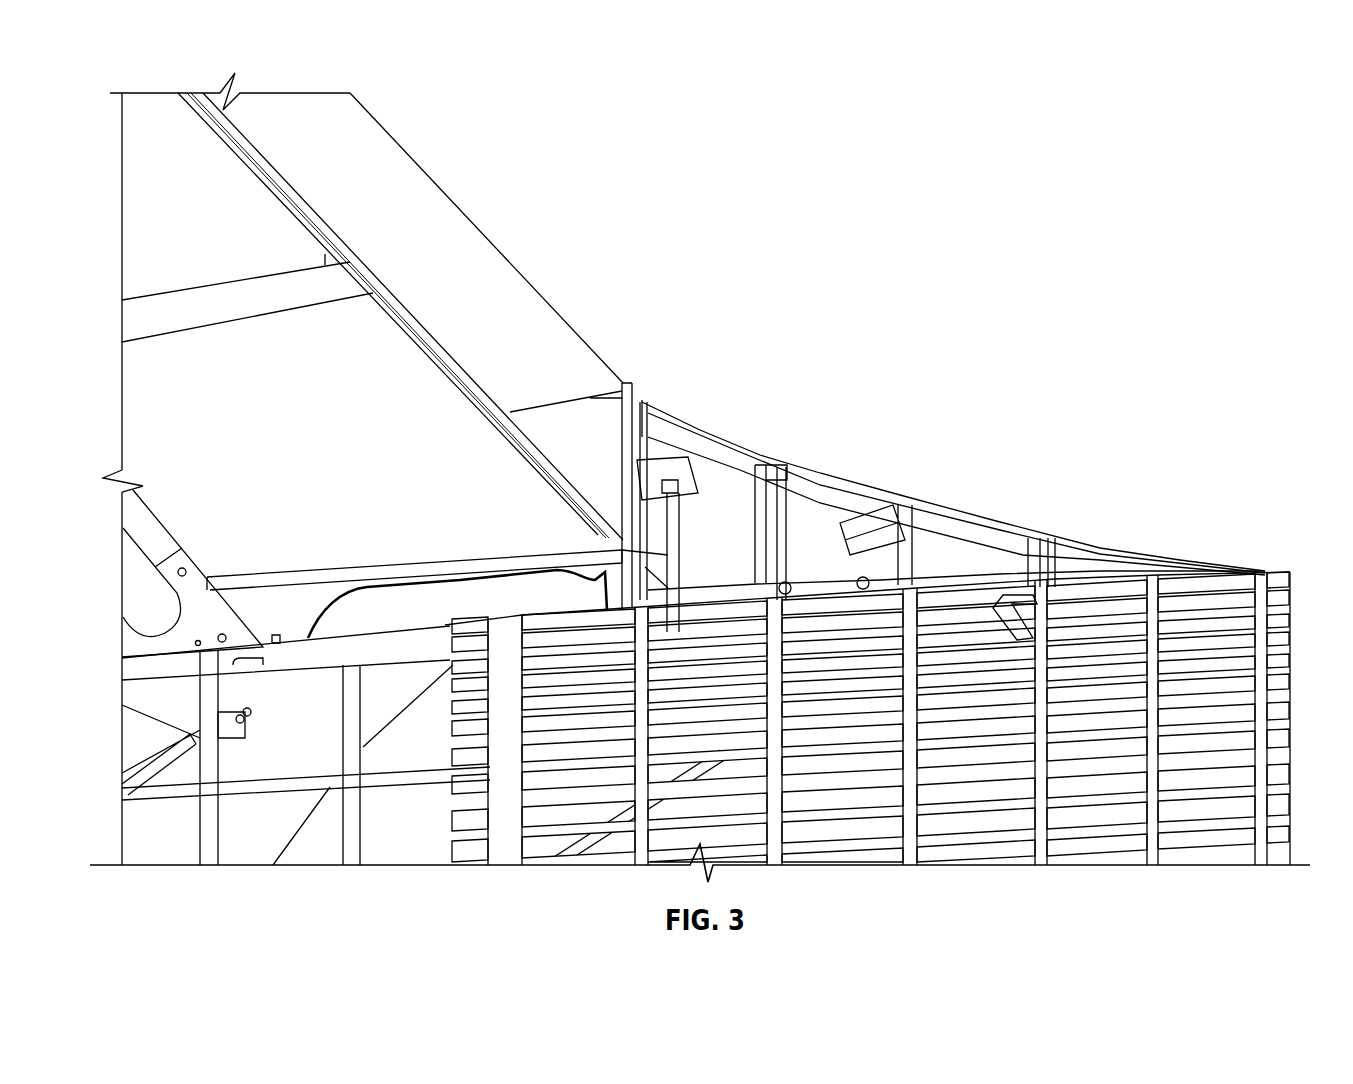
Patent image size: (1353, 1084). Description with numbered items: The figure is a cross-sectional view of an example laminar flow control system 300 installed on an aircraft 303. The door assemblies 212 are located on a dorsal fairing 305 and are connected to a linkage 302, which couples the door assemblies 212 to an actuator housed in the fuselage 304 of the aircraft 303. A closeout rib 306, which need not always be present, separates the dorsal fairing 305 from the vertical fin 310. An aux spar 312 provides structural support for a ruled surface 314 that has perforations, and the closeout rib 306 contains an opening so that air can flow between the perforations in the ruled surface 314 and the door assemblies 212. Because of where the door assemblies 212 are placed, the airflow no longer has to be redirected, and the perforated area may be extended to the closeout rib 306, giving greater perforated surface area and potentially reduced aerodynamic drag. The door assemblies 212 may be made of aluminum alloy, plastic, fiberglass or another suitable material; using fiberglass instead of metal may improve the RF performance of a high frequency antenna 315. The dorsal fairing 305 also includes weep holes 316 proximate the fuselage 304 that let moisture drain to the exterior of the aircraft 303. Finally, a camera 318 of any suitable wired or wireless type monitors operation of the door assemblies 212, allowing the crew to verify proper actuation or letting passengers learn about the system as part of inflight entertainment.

The laminar flow control system 300 is at (886, 207).
The linkage 302 is at (593, 533).
The aircraft 303 is at (1162, 498).
The fuselage 304 is at (1090, 640).
The dorsal fairing 305 is at (967, 528).
The closeout rib 306 is at (638, 398).
The door assemblies 212 is at (690, 465).
The high frequency antenna 315 is at (745, 475).
The weep holes 316 is at (792, 583).
The camera 318 is at (875, 535).
The vertical fin 310 is at (483, 275).
The aux spar 312 is at (478, 410).
The ruled surface 314 is at (392, 197).